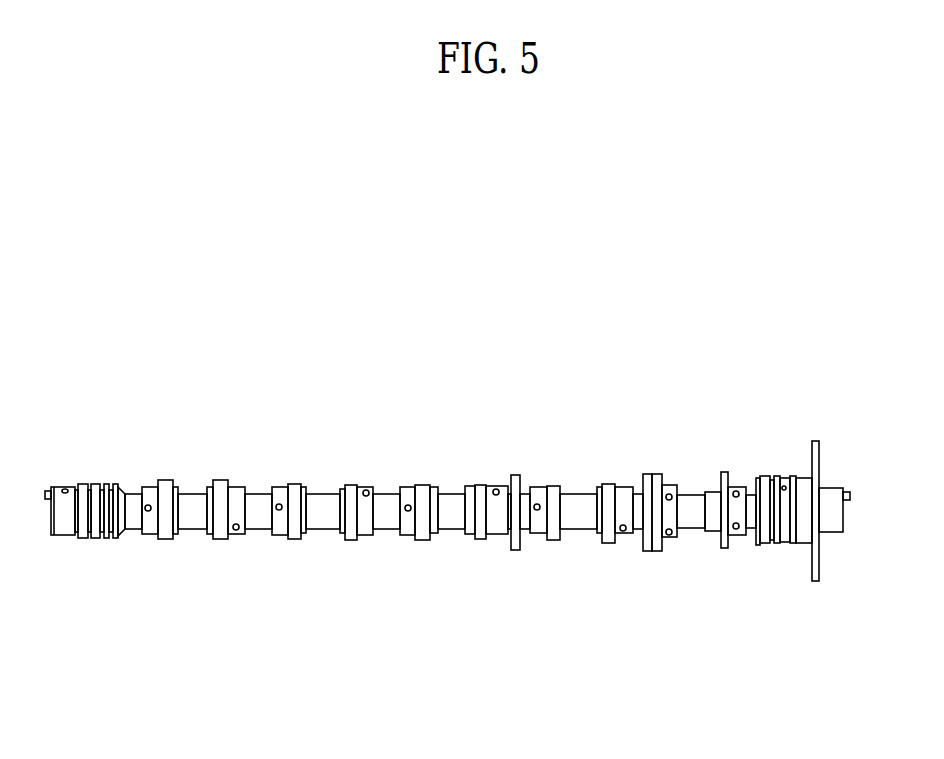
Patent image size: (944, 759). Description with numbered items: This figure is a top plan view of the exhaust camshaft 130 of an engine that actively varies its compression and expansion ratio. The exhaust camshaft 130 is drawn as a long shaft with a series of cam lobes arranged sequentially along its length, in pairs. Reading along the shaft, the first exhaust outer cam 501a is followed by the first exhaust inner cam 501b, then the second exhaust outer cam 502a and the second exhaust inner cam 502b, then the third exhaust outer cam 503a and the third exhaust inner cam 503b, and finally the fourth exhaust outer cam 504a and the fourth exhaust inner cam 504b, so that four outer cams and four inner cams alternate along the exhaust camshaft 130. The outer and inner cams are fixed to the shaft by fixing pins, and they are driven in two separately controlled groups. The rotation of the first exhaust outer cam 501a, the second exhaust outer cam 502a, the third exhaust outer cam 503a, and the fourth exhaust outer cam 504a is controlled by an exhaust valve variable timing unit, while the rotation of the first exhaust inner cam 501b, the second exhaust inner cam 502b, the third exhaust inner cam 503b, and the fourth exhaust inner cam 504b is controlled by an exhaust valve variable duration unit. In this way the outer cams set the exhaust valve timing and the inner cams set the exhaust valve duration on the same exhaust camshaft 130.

The exhaust camshaft 130 is at (489, 405).
The first exhaust outer cam 501a is at (163, 539).
The first exhaust inner cam 501b is at (218, 539).
The second exhaust outer cam 502a is at (293, 539).
The second exhaust inner cam 502b is at (348, 540).
The third exhaust outer cam 503a is at (423, 540).
The third exhaust inner cam 503b is at (480, 539).
The fourth exhaust outer cam 504a is at (552, 540).
The fourth exhaust inner cam 504b is at (607, 543).